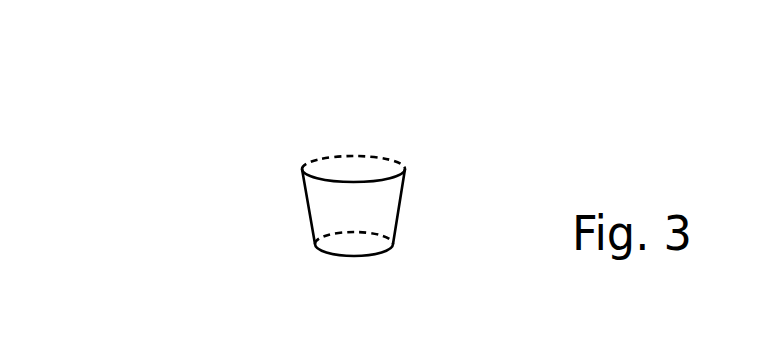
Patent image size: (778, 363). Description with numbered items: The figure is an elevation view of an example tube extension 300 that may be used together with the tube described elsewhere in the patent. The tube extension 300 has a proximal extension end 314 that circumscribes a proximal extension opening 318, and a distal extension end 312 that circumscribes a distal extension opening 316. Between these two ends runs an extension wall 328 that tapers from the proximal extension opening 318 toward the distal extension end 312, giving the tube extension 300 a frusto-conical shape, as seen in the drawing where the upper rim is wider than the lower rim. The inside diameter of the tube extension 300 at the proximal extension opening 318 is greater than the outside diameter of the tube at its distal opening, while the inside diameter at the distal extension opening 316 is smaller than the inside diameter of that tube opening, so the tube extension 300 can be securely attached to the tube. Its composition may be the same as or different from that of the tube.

The tube extension 300 is at (133, 138).
The proximal extension end 314 is at (407, 140).
The proximal extension opening 318 is at (304, 168).
The extension wall 328 is at (310, 222).
The distal extension opening 316 is at (314, 247).
The distal extension end 312 is at (382, 262).